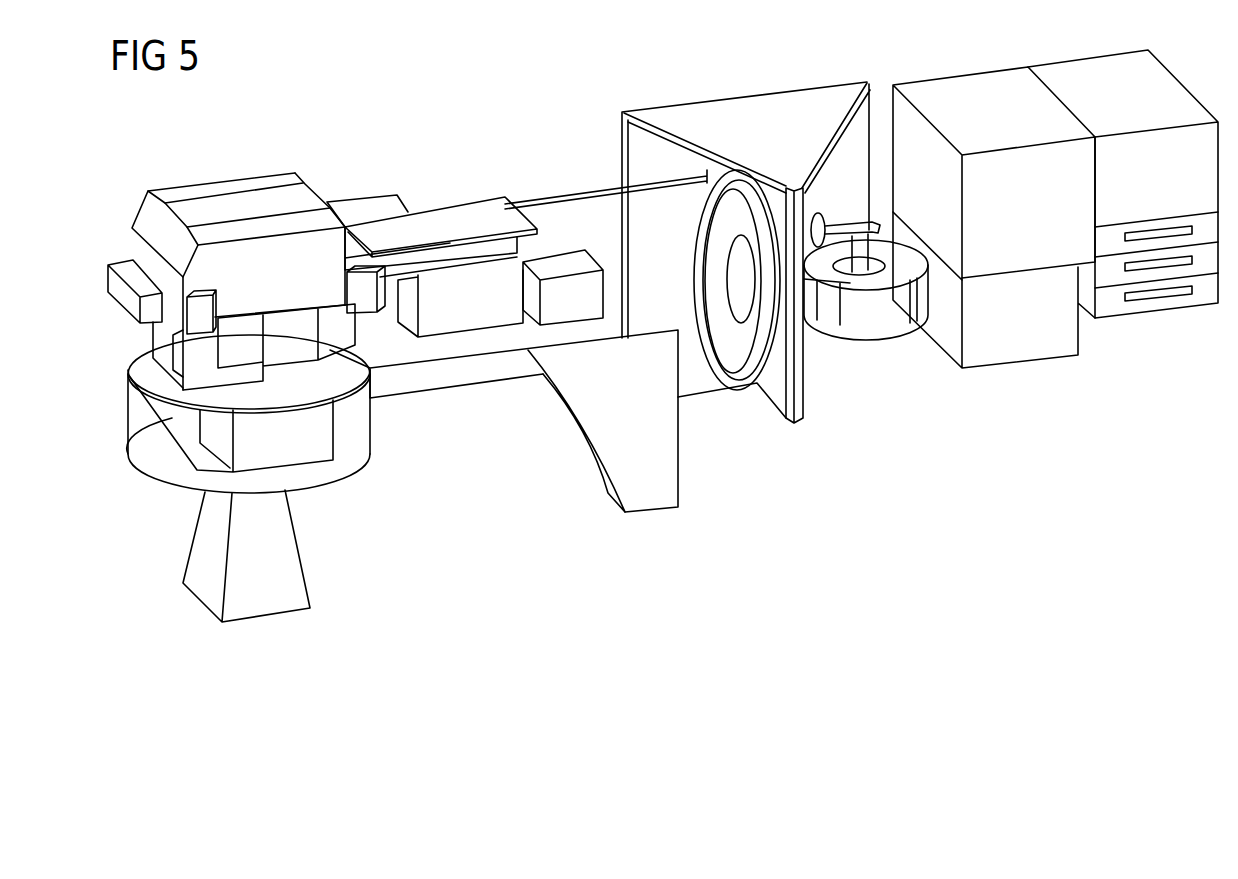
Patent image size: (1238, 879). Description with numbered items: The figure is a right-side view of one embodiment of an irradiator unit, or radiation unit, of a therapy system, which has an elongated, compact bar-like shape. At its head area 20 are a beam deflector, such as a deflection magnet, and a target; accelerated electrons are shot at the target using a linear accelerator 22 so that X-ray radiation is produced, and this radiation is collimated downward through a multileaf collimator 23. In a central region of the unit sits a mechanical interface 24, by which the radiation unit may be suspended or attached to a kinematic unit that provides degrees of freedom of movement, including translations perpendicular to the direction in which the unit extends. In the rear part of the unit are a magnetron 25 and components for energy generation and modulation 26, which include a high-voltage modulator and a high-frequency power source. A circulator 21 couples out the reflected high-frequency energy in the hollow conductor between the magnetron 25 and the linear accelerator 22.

The head area 20 is at (263, 258).
The circulator 21 is at (572, 305).
The linear accelerator 22 is at (443, 222).
The multileaf collimator 23 is at (302, 443).
The mechanical interface 24 is at (738, 122).
The magnetron 25 is at (878, 343).
The components for energy generation and modulation 26 is at (1078, 238).